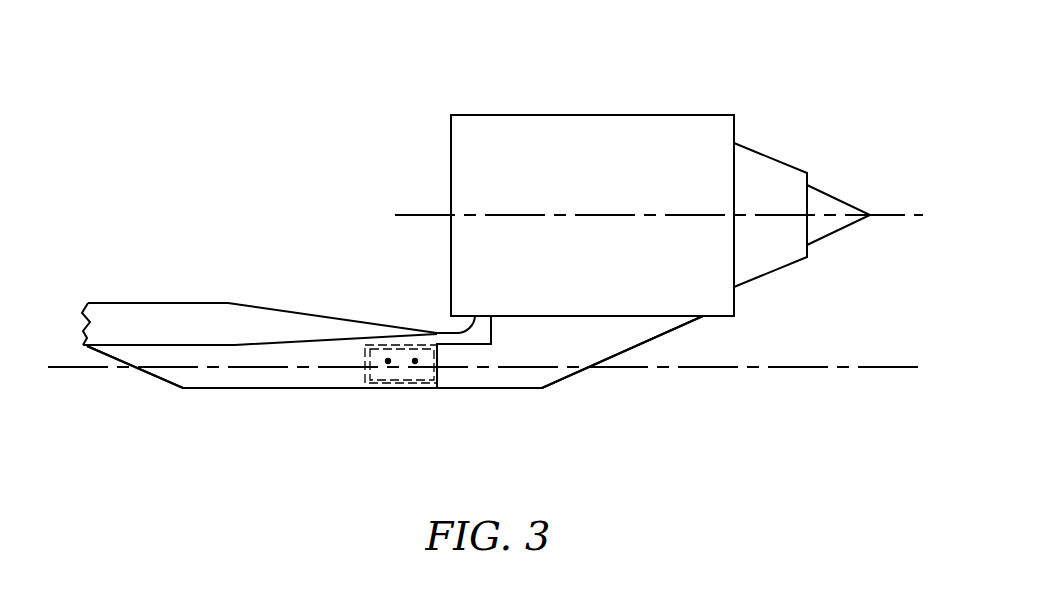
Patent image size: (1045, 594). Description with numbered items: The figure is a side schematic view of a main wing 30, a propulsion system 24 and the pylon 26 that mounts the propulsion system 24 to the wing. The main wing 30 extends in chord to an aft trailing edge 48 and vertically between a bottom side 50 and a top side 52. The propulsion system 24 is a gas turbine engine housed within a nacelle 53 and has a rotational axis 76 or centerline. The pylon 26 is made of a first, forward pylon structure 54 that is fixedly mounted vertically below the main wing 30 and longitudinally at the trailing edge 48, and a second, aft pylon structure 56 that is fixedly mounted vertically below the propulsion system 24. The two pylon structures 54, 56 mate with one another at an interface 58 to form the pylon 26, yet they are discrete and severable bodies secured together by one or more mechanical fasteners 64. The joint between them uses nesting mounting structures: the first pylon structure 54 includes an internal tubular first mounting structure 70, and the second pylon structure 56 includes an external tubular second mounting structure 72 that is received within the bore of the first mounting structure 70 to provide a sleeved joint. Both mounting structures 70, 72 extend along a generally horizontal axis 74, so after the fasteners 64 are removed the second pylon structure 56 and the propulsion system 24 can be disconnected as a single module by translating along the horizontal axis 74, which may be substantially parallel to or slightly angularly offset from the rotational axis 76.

The propulsion system 24 is at (605, 113).
The pylon 26 is at (496, 390).
The main wing 30 is at (160, 301).
The trailing edge 48 is at (476, 316).
The bottom side 50 is at (127, 347).
The top side 52 is at (111, 302).
The nacelle 53 is at (518, 113).
The first pylon structure 54 is at (243, 390).
The second pylon structure 56 is at (568, 377).
The interface 58 is at (437, 368).
The mechanical fasteners 64 is at (415, 362).
The first mounting structure 70 is at (381, 343).
The second mounting structure 72 is at (420, 345).
The horizontal axis 74 is at (800, 368).
The rotational axis 76 is at (902, 205).